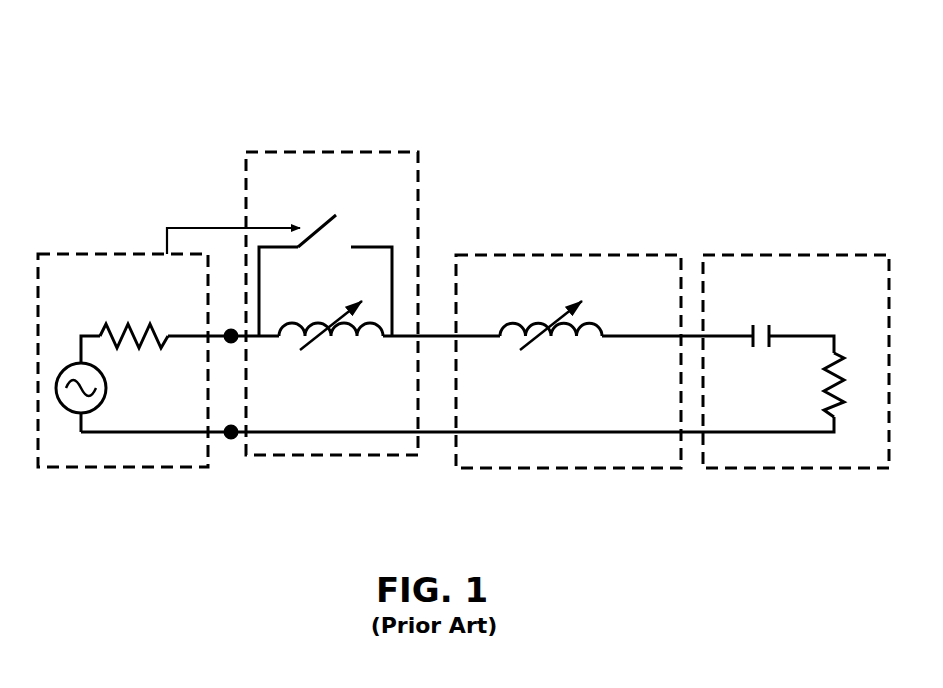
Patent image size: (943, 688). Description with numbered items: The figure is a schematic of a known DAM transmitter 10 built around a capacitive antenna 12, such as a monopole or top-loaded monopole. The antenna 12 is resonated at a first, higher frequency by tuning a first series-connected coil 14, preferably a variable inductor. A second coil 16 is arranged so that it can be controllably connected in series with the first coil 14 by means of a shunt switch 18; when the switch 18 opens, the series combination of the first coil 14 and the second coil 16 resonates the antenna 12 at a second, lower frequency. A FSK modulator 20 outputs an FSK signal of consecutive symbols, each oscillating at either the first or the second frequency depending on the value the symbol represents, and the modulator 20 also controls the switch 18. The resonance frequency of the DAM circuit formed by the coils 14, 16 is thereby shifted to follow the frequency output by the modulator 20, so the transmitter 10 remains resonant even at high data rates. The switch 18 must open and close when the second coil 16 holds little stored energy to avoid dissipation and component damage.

The DAM transmitter 10 is at (118, 160).
The capacitive antenna 12 is at (793, 255).
The first series-connected coil 14 is at (573, 255).
The second coil 16 is at (340, 340).
The shunt switch 18 is at (313, 222).
The FSK modulator 20 is at (107, 254).